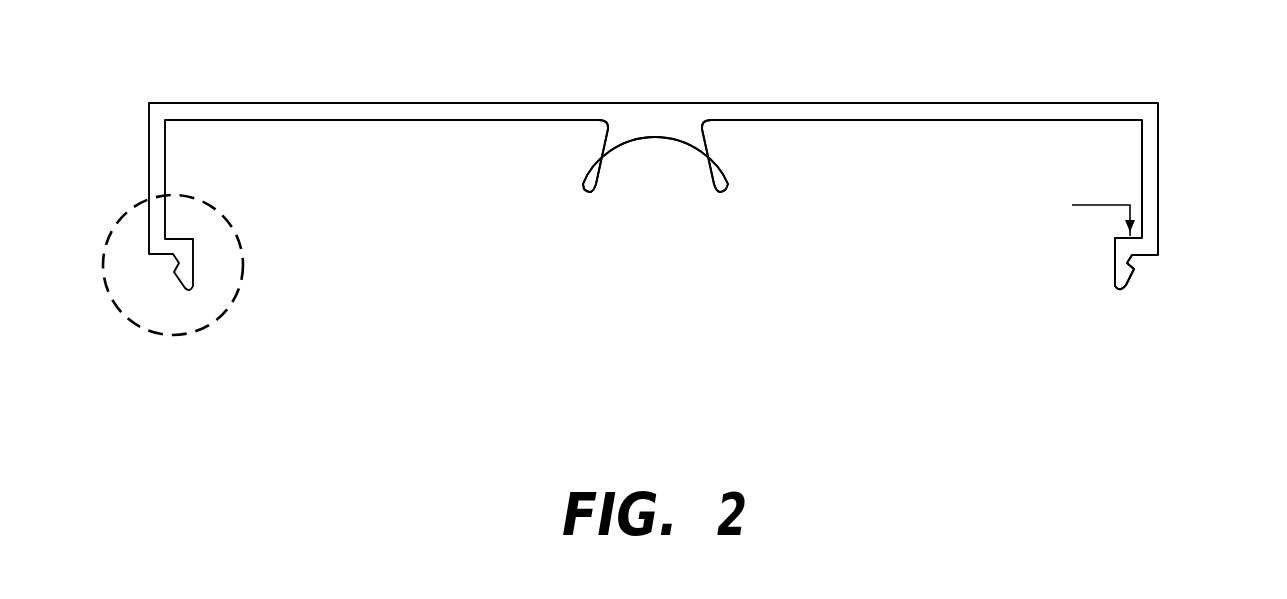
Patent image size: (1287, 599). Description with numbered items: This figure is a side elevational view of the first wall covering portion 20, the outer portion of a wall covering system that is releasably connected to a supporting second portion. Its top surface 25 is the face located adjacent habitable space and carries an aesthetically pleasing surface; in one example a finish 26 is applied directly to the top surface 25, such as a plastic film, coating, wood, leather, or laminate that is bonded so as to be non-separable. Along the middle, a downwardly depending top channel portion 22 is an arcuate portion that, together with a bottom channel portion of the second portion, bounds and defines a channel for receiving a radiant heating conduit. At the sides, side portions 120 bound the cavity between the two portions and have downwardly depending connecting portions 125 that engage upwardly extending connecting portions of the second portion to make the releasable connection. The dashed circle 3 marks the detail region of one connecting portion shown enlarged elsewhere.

The first wall covering portion 20 is at (437, 250).
The finish 26 is at (404, 103).
The top surface 25 is at (883, 103).
The top channel portion 22 is at (583, 176).
The detail circle (FIG. 3) 3 is at (104, 265).
The side portion 120 is at (1158, 194).
The connecting portion 125 is at (1127, 260).